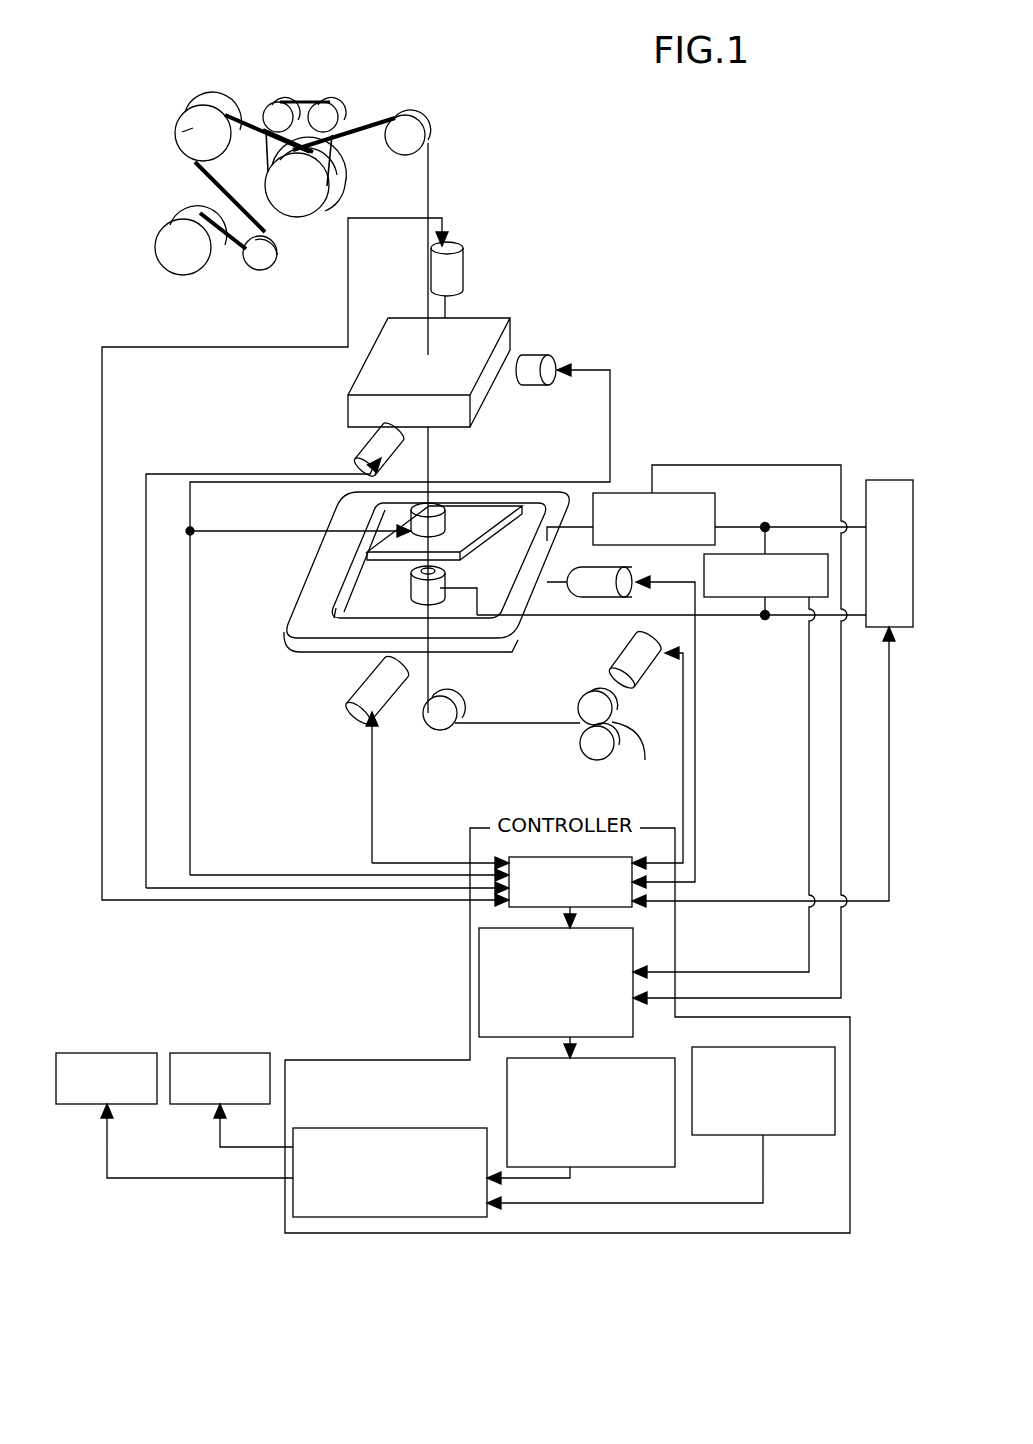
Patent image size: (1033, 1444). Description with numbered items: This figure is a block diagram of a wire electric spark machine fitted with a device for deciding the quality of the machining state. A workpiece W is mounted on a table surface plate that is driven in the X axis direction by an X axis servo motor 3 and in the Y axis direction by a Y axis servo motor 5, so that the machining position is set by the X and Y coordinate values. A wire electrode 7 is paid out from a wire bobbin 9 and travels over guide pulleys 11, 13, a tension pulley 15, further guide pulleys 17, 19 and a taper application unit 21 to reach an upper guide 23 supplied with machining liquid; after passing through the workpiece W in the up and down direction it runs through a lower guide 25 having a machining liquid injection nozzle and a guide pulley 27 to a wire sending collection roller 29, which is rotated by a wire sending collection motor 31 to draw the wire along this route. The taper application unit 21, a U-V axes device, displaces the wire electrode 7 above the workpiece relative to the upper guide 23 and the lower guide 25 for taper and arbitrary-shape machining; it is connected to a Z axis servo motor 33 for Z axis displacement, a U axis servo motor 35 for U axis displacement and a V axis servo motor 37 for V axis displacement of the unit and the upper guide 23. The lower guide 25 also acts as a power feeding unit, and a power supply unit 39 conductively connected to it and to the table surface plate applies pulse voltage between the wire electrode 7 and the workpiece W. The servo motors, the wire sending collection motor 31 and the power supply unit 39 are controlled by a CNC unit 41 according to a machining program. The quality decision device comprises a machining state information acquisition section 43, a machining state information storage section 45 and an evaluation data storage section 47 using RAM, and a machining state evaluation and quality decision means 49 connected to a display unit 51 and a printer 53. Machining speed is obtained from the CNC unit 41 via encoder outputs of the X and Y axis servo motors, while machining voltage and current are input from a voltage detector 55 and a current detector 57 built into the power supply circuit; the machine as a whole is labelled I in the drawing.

The X axis servo motor 3 is at (634, 576).
The Y axis servo motor 5 is at (364, 696).
The wire electrode 7 is at (430, 450).
The wire bobbin 9 is at (180, 255).
The guide pulley 11 is at (258, 263).
The guide pulley 13 is at (193, 128).
The tension pulley 15 is at (297, 205).
The guide pulley 17 is at (285, 105).
The guide pulley 19 is at (408, 147).
The taper application unit 21 is at (398, 325).
The upper guide 23 is at (420, 520).
The lower guide 25 is at (415, 585).
The guide pulley 27 is at (432, 720).
The wire sending collection roller 29 is at (590, 750).
The wire sending collection motor 31 is at (622, 665).
The Z axis servo motor 33 is at (455, 251).
The U axis servo motor 35 is at (556, 356).
The V axis servo motor 37 is at (372, 453).
The power supply unit 39 is at (873, 485).
The CNC unit 41 is at (591, 866).
The machining state information acquisition section 43 is at (633, 931).
The machining state information storage section 45 is at (659, 1066).
The evaluation data storage section 47 is at (748, 1046).
The machining state evaluation and quality decision means 49 is at (454, 1128).
The display unit 51 is at (240, 1053).
The printer 53 is at (127, 1053).
The voltage detector 55 is at (791, 558).
The current detector 57 is at (682, 497).
The workpiece W is at (540, 496).
The machining tank I is at (300, 622).